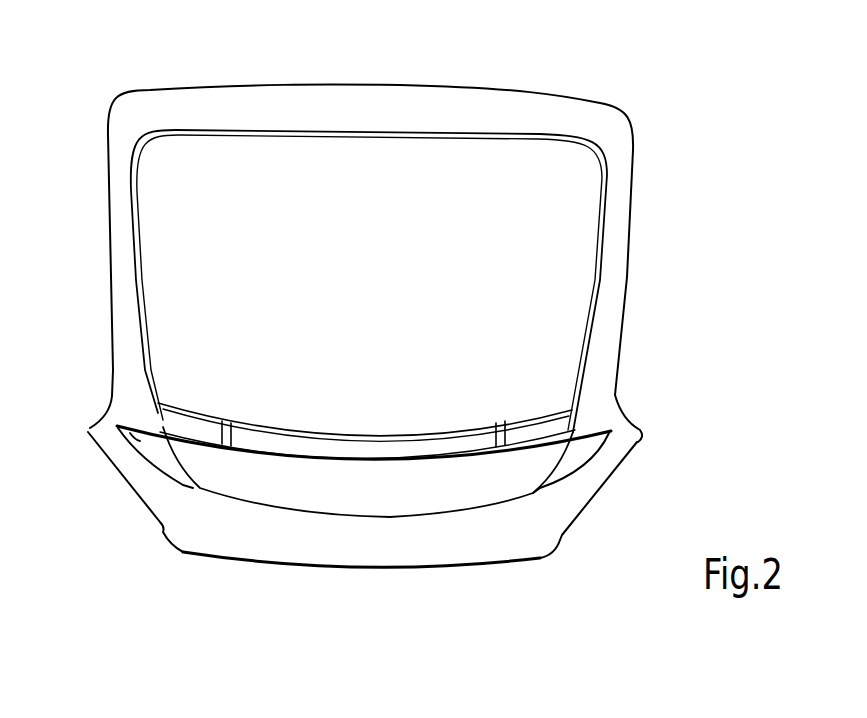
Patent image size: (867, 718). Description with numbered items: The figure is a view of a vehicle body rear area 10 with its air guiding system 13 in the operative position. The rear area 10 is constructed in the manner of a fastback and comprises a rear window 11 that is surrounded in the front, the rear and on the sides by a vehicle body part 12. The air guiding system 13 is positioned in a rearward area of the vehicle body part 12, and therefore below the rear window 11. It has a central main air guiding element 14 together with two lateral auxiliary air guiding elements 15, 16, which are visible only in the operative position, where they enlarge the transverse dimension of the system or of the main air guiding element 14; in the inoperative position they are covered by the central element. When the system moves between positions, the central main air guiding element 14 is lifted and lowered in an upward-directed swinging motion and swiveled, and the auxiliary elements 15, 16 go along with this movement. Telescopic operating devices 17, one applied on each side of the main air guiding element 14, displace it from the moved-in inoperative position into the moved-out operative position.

The vehicle body rear area 10 is at (96, 503).
The rear window 11 is at (388, 300).
The vehicle body part 12 is at (381, 98).
The air guiding system 13 is at (437, 448).
The central main air guiding element 14 is at (298, 487).
The lateral auxiliary air guiding element 15 is at (123, 424).
The lateral auxiliary air guiding element 16 is at (582, 453).
The telescopic operating device 17 is at (237, 437).